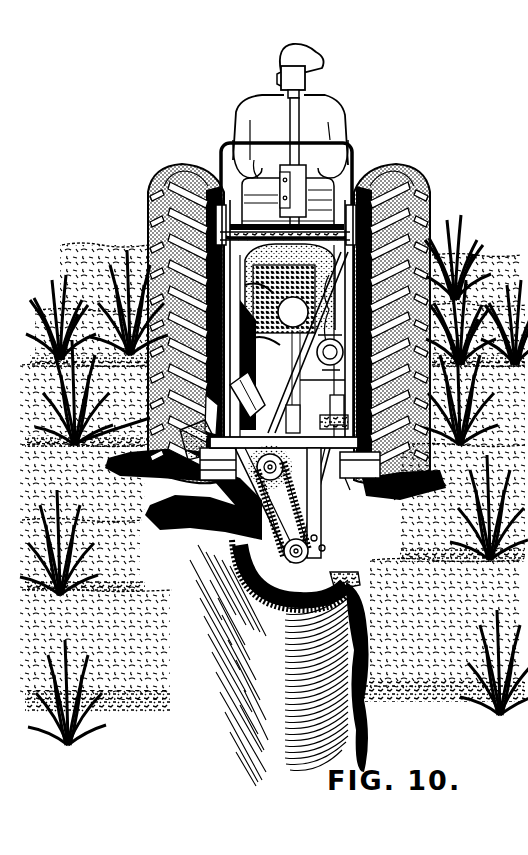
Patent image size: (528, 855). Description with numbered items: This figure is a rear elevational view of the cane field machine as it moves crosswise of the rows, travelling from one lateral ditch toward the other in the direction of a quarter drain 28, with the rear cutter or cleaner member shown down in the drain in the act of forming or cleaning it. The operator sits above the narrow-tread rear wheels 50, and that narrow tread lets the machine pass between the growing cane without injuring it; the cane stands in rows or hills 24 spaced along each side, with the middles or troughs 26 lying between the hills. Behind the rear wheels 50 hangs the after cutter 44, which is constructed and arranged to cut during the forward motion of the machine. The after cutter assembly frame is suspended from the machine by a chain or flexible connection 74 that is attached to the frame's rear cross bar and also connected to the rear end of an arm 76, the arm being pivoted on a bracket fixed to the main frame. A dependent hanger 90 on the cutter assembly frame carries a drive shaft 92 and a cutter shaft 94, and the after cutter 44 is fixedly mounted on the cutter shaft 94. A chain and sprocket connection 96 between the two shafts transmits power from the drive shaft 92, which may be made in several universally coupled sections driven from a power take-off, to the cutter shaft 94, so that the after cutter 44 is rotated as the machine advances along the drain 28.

The rows or hills 24 is at (430, 534).
The middles or troughs 26 is at (430, 627).
The quarter drain 28 is at (268, 738).
The after cutter 44 is at (368, 595).
The rear wheels 50 is at (147, 183).
The chain or flexible connection 74 is at (210, 414).
The arm 76 is at (304, 266).
The dependent hanger 90 is at (372, 511).
The drive shaft 92 is at (201, 450).
The cutter shaft 94 is at (362, 576).
The chain and sprocket connection 96 is at (245, 532).